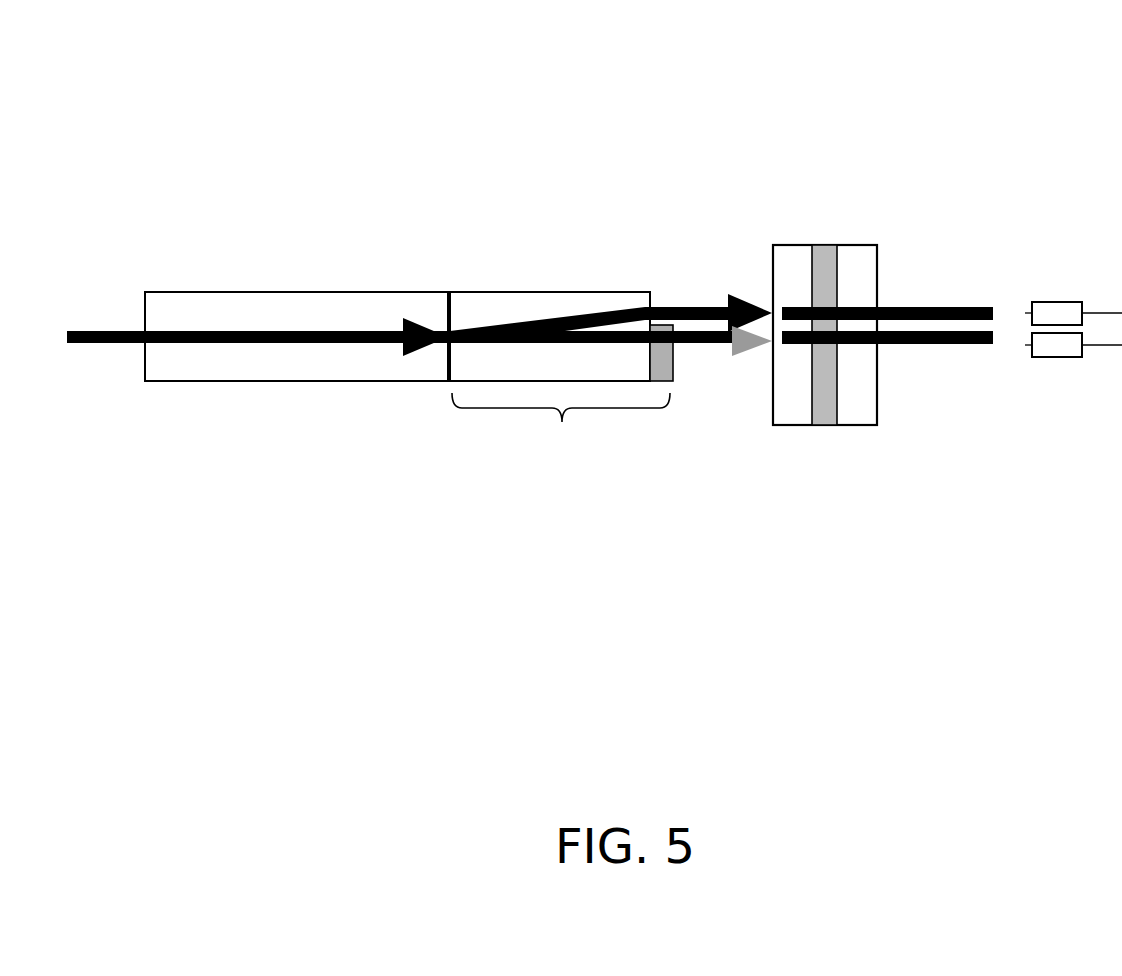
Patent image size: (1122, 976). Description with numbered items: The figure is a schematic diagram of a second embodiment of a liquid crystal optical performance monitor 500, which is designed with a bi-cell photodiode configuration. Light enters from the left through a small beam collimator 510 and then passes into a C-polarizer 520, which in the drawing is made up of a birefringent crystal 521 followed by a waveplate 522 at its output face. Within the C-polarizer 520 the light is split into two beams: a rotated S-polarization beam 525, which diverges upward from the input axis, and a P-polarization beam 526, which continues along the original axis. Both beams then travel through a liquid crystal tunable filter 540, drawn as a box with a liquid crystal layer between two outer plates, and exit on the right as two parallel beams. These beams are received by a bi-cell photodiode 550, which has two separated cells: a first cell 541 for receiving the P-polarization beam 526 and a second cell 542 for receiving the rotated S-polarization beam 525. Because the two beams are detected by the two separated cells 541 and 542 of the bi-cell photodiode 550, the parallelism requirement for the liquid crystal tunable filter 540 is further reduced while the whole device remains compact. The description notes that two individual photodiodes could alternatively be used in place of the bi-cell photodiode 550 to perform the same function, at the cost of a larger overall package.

The liquid crystal optical performance monitor 500 is at (277, 695).
The small beam collimator 510 is at (296, 413).
The C-polarizer 520 is at (560, 424).
The birefringent crystal 521 is at (521, 292).
The waveplate 522 is at (673, 381).
The rotated S-polarization beam 525 is at (607, 330).
The P-polarization beam 526 is at (672, 308).
The liquid crystal tunable filter 540 is at (883, 394).
The cell_1 541 is at (1073, 303).
The cell_2 542 is at (1073, 356).
The bi-cell photodiode 550 is at (1073, 406).